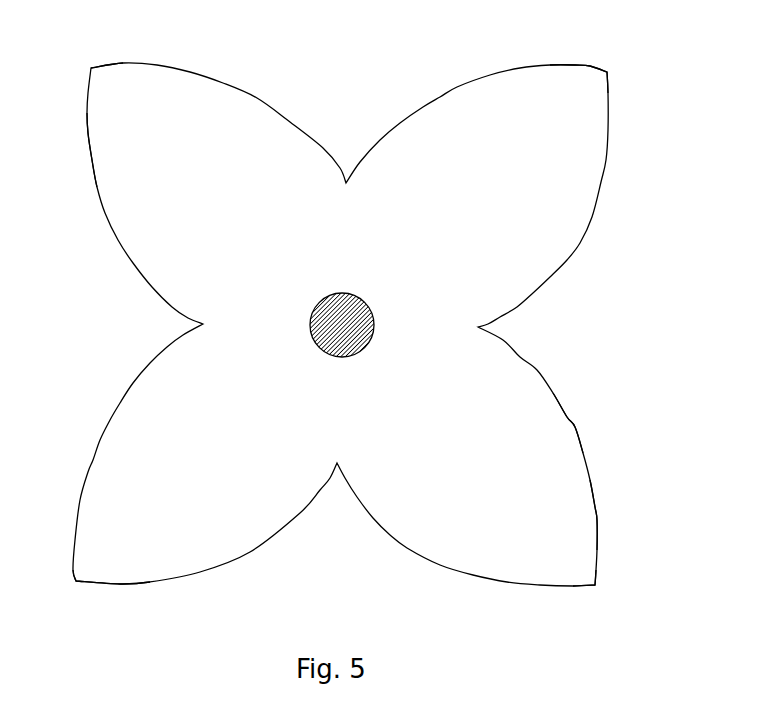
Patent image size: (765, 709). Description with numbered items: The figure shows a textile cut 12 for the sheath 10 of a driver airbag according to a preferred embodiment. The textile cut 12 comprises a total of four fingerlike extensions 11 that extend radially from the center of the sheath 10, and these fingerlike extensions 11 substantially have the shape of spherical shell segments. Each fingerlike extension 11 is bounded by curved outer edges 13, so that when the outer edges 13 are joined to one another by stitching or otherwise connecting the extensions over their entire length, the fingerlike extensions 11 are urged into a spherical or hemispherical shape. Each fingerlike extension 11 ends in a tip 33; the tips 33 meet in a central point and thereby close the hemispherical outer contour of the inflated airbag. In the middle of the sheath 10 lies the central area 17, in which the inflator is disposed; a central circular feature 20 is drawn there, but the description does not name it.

The sheath 10 is at (605, 131).
The fingerlike extensions 11 is at (97, 127).
The textile cut 12 is at (613, 201).
The curved outer edges 13 is at (576, 424).
The central area 17 is at (427, 376).
The central opening 20 is at (327, 358).
The tips 33 is at (91, 68).